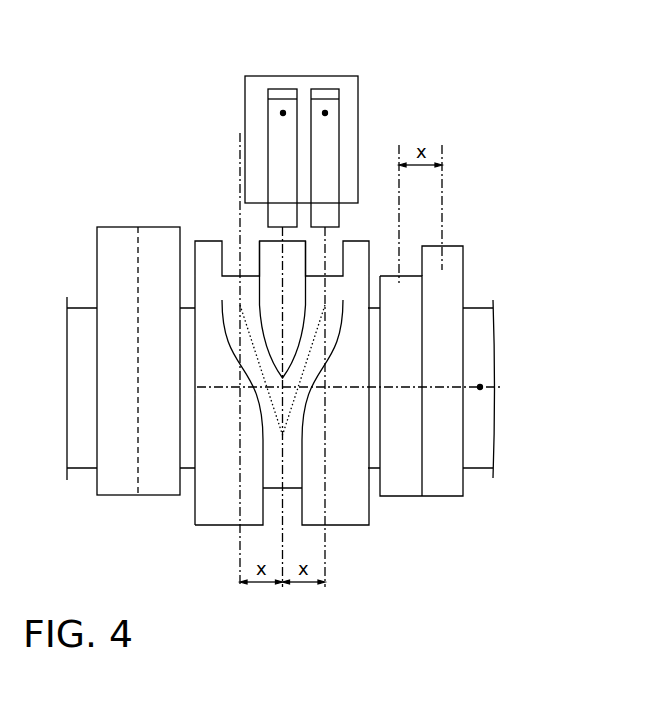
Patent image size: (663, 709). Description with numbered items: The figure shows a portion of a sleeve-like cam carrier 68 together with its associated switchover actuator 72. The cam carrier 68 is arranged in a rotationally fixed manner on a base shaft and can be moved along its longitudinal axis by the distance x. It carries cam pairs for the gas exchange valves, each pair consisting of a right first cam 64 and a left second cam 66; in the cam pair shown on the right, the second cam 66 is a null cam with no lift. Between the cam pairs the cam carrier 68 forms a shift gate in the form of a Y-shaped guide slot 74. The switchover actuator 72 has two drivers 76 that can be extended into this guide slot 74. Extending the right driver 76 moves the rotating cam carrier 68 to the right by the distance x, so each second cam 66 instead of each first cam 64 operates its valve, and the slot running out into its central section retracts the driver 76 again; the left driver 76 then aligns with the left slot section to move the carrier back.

The first cam 64 is at (163, 226).
The second cam 66 is at (117, 229).
The cam carrier 68 is at (482, 388).
The switchover actuator 72 is at (234, 64).
The Y-shaped guide slot 74 is at (270, 444).
The drivers 76 is at (325, 111).